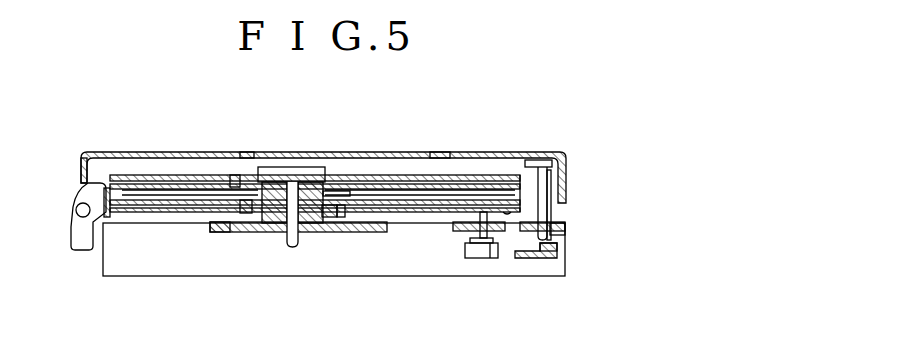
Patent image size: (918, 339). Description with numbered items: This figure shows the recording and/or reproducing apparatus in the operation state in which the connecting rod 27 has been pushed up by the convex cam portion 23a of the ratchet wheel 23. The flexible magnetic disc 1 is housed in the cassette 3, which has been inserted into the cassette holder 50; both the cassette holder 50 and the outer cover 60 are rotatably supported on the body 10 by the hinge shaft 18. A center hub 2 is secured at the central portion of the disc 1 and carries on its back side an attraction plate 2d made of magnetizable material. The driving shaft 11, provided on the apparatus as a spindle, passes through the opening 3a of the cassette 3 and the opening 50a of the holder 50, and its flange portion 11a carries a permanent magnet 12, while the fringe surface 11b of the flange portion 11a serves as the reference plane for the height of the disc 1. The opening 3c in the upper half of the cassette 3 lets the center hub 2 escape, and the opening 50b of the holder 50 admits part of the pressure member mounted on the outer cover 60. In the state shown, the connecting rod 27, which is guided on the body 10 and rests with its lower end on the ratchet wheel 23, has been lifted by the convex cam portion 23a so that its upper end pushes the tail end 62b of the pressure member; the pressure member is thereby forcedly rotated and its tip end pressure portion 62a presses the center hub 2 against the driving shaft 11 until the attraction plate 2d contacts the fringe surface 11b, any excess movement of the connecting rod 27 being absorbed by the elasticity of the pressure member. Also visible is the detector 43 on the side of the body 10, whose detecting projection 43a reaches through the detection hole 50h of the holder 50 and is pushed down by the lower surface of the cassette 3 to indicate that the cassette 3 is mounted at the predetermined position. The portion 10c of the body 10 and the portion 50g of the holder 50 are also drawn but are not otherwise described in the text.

The flexible magnetic disc 1 is at (158, 190).
The center hub 2 is at (275, 175).
The attraction plate 2d is at (236, 185).
The cassette 3 is at (473, 178).
The opening 3a is at (355, 232).
The opening 3c is at (338, 192).
The body 10 is at (392, 277).
The base corner portion 10c is at (566, 226).
The driving shaft 11 is at (289, 247).
The flange portion 11a is at (333, 222).
The fringe surface 11b is at (252, 222).
The permanent magnet 12 is at (325, 222).
The hinge shaft 18 is at (74, 205).
The ratchet wheel 23 is at (550, 258).
The convex cam portion 23a is at (558, 248).
The connecting rod 27 is at (552, 182).
The detector 43 is at (483, 258).
The detecting projection 43a is at (480, 218).
The cassette holder 50 is at (370, 152).
The opening 50a is at (223, 233).
The opening 50b is at (247, 152).
The cover side wall 50g is at (99, 152).
The detection hole 50h is at (505, 220).
The outer cover 60 is at (440, 152).
The tip end pressure portion 62a is at (302, 167).
The tail end 62b is at (537, 160).